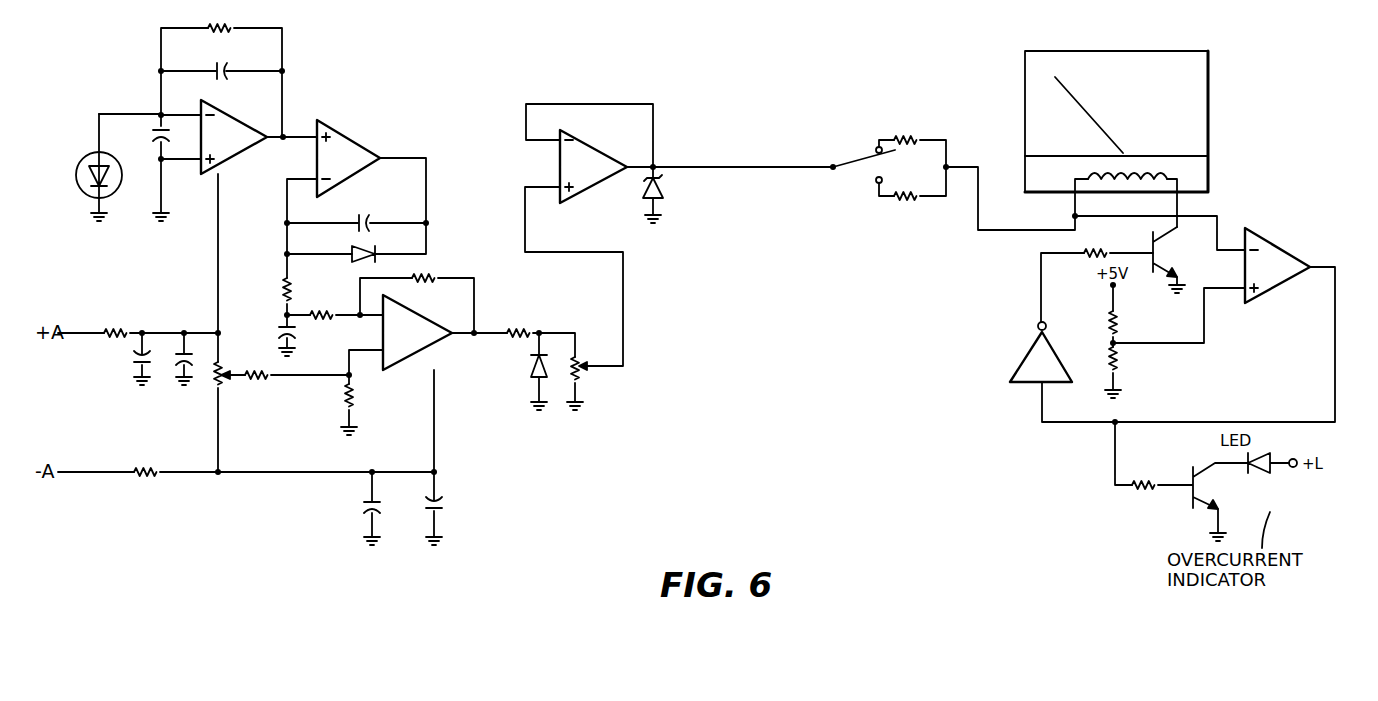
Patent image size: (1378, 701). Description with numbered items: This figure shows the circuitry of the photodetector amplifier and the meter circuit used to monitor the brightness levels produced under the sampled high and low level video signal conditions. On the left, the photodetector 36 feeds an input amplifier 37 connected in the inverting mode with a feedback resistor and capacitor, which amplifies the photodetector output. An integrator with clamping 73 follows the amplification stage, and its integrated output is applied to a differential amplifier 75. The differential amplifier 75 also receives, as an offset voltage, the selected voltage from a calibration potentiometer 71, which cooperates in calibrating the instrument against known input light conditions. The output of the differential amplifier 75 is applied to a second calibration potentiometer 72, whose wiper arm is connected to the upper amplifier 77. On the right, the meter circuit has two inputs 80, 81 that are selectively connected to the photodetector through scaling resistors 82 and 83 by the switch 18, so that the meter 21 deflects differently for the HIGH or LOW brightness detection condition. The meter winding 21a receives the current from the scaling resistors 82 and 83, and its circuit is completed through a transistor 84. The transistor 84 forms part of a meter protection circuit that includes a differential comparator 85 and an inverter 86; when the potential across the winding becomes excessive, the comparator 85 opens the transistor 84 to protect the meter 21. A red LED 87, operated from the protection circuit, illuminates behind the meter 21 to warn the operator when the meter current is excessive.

The switch 18 is at (848, 170).
The meter 21 is at (1208, 115).
The meter coil 21a is at (1167, 177).
The photodetector 36 is at (81, 165).
The input amplifier 37 is at (237, 130).
The calibration potentiometer 71 is at (224, 386).
The calibration potentiometer 72 is at (584, 378).
The integrator with clamping 73 is at (404, 205).
The differential amplifier 75 is at (418, 410).
The upper amplifier 77 is at (612, 235).
The input 80 is at (878, 146).
The input 81 is at (878, 183).
The scaling resistor 82 is at (908, 138).
The scaling resistor 83 is at (906, 198).
The transistor 84 is at (1172, 270).
The differential comparator 85 is at (1268, 255).
The inverter 86 is at (1035, 350).
The red LED 87 is at (1252, 474).